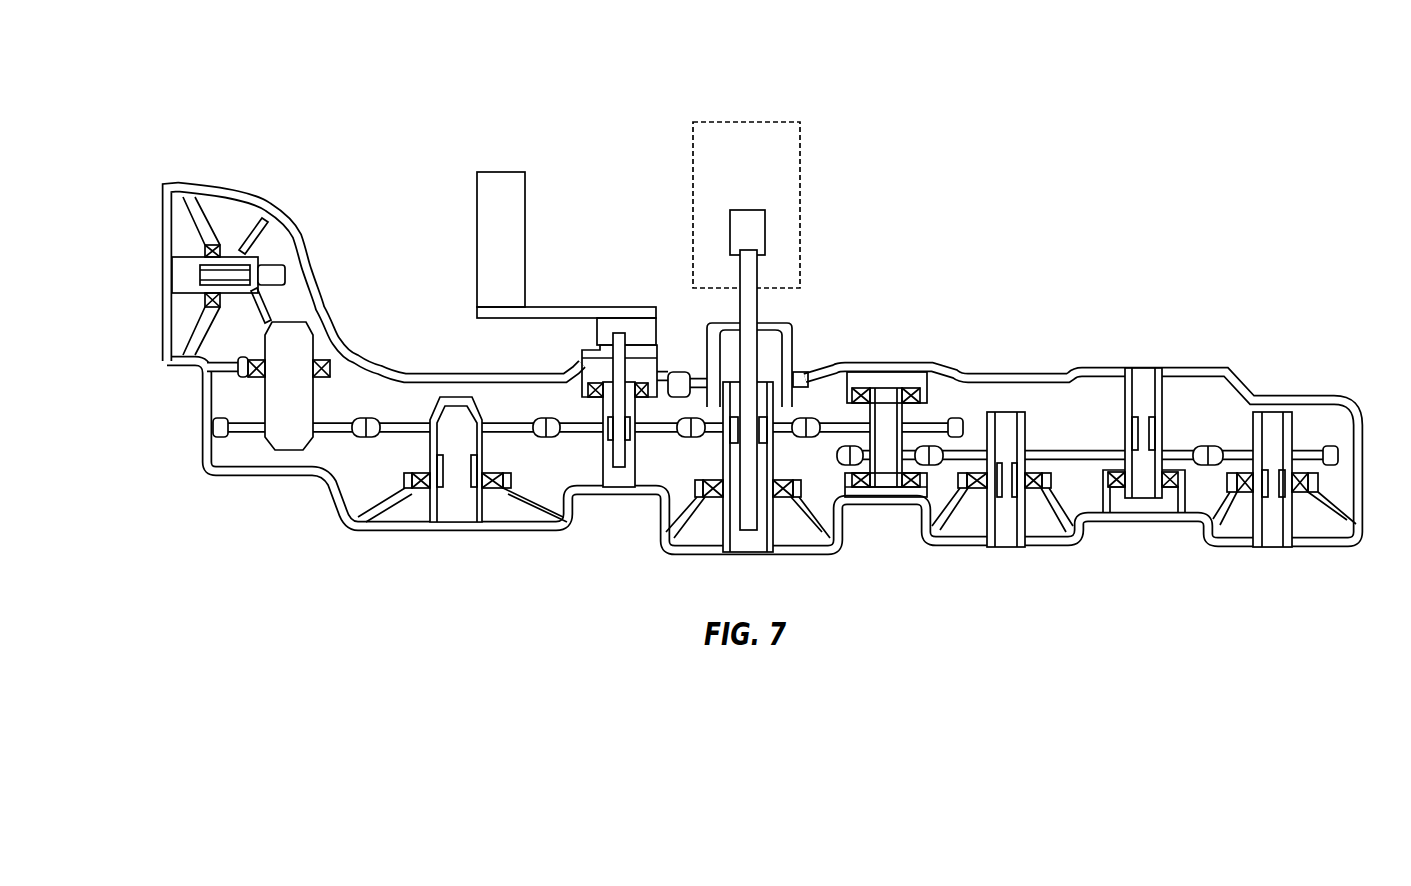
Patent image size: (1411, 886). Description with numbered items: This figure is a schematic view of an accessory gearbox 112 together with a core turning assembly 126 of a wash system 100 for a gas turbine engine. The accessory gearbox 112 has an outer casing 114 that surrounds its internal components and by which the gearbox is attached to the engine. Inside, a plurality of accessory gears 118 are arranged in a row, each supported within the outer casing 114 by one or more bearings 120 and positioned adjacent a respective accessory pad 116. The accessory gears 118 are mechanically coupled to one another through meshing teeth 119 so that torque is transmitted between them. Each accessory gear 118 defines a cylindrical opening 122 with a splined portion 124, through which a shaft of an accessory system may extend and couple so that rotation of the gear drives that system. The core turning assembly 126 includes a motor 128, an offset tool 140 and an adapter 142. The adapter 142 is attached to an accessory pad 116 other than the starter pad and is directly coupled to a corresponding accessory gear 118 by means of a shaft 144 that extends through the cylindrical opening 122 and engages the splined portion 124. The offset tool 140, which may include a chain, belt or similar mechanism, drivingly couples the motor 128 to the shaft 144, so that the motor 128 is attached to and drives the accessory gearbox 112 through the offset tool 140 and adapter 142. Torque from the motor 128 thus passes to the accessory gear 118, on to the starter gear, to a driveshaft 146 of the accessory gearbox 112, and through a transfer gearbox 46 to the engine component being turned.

The transfer gearbox 46 is at (768, 122).
The wash system 100 is at (1112, 113).
The accessory gearbox 112 is at (1140, 230).
The outer casing 114 is at (215, 468).
The accessory pad 116 is at (162, 345).
The accessory gear 118 is at (237, 253).
The meshing teeth 119 is at (545, 410).
The bearing 120 is at (200, 248).
The cylindrical opening 122 is at (172, 270).
The splined portion 124 is at (250, 270).
The core turning assembly 126 is at (602, 157).
The motor 128 is at (495, 190).
The offset tool 140 is at (567, 310).
The adapter 142 is at (643, 330).
The shaft 144 is at (598, 366).
The driveshaft 146 is at (752, 353).